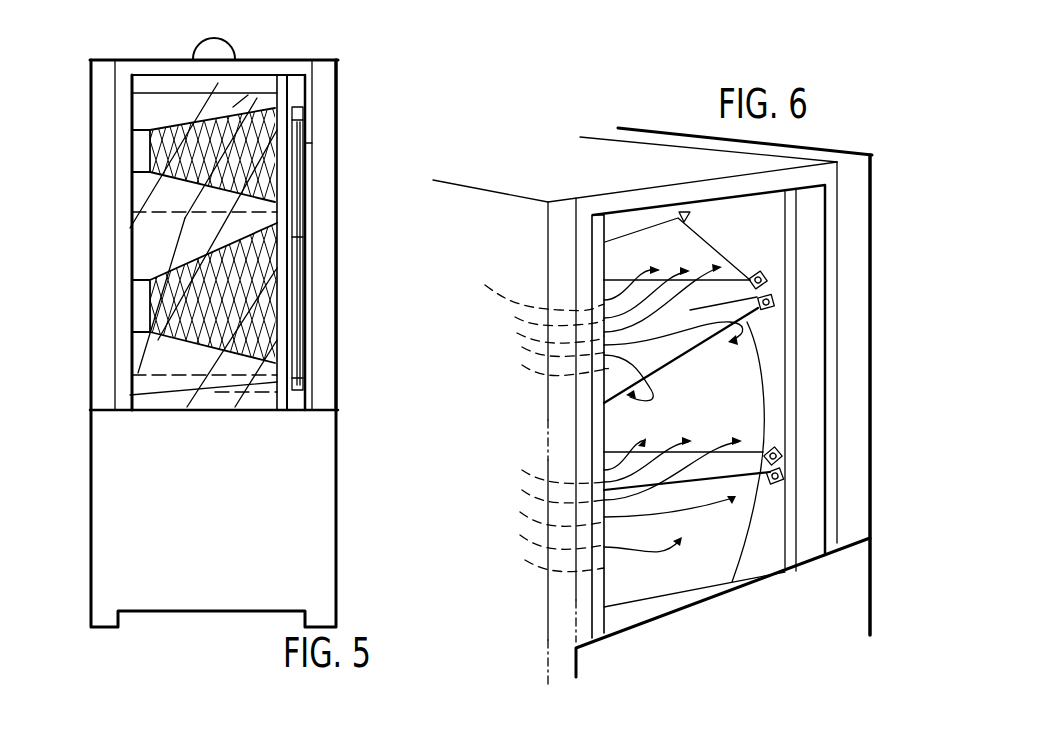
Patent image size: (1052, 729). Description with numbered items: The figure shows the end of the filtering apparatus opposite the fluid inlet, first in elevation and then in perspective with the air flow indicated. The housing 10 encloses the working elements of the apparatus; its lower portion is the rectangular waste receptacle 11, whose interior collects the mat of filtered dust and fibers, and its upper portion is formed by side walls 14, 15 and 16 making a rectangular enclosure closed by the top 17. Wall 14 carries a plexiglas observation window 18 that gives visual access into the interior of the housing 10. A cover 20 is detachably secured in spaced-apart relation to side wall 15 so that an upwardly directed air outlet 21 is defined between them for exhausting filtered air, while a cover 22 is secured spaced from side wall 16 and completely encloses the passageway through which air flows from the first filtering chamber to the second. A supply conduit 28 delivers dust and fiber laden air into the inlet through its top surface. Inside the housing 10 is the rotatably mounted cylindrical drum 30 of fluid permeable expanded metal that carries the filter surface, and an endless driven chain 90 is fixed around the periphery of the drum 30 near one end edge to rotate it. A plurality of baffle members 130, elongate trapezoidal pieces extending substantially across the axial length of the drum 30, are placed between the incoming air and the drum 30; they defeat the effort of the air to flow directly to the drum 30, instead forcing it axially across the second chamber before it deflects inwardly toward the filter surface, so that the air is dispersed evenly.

In FIG. 6, the housing 10 is at (620, 95).
In FIG. 5, the waste receptacle 11 is at (310, 535).
In FIG. 6, the waste receptacle 11 is at (855, 572).
In FIG. 5, the side wall 14 is at (99, 372).
In FIG. 6, the side wall 14 is at (849, 398).
In FIG. 5, the side wall 15 is at (315, 373).
In FIG. 5, the side wall 16 is at (112, 258).
In FIG. 5, the top 17 is at (157, 58).
In FIG. 6, the top 17 is at (655, 160).
In FIG. 5, the plexiglas observation window 18 is at (213, 340).
In FIG. 5, the cover 20 is at (337, 233).
In FIG. 5, the air outlet 21 is at (322, 73).
In FIG. 6, the air outlet 21 is at (820, 157).
In FIG. 5, the cover 22 is at (89, 147).
In FIG. 6, the cover 22 is at (525, 445).
In FIG. 5, the supply conduit 28 is at (220, 55).
In FIG. 6, the cylindrical drum 30 is at (720, 373).
In FIG. 5, the driven chain 90 is at (303, 143).
In FIG. 5, the baffle members 130 is at (170, 118).
In FIG. 6, the baffle members 130 is at (620, 225).